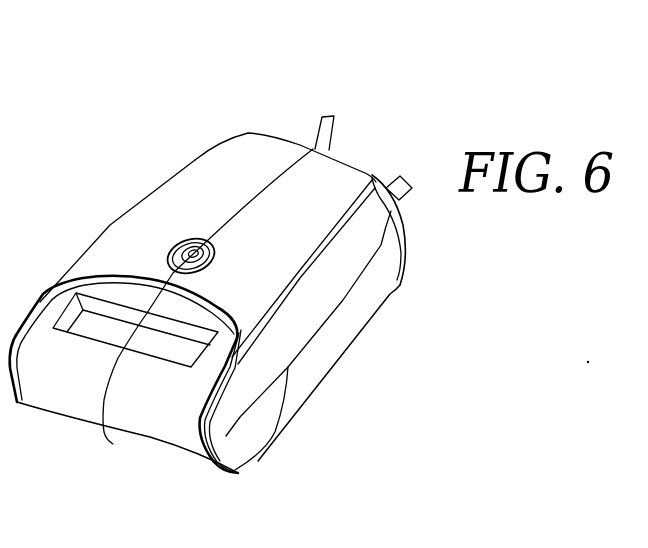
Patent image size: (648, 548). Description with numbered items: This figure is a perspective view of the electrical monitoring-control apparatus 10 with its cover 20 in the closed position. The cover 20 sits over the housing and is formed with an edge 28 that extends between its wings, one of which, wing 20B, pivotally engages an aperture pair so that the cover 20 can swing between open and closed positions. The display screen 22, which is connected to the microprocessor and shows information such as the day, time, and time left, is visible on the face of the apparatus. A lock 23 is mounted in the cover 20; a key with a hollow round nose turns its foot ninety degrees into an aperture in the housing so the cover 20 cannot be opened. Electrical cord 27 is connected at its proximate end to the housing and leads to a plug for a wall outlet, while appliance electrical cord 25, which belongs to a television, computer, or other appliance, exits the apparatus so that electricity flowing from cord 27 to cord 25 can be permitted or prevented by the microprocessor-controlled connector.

The electrical monitoring-control apparatus 10 is at (280, 122).
The cover 20 is at (236, 166).
The wing 20B is at (243, 448).
The display screen 22 is at (105, 310).
The lock 23 is at (183, 238).
The appliance electrical cord 25 is at (334, 128).
The electrical cord 27 is at (392, 174).
The edge 28 is at (230, 322).